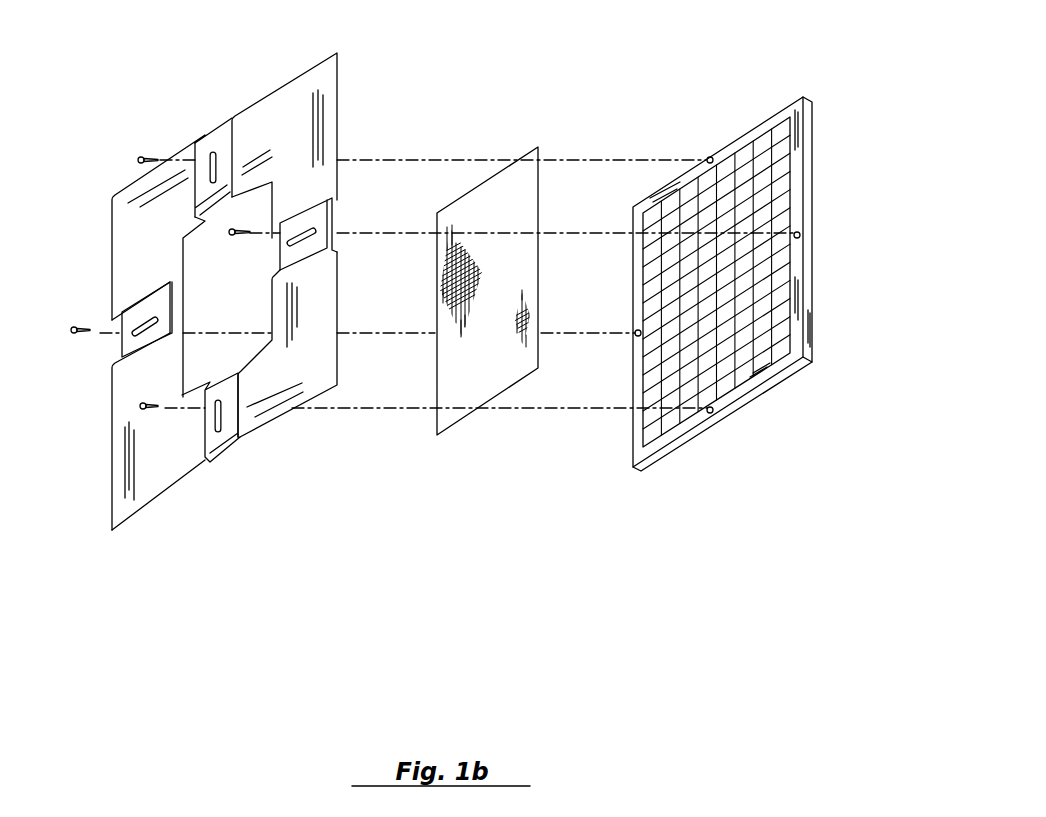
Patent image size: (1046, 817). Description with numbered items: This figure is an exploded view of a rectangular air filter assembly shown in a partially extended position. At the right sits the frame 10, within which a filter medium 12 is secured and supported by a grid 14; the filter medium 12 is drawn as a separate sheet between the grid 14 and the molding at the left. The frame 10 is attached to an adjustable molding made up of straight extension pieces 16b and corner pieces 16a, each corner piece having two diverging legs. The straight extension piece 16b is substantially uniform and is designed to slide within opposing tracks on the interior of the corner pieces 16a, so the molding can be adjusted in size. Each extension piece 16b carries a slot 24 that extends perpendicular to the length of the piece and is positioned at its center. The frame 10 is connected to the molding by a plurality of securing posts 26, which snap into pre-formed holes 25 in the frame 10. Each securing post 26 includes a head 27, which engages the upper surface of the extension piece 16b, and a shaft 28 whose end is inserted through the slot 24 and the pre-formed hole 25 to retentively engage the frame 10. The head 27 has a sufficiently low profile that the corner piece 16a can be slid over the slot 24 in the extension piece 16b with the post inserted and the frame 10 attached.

The frame 10 is at (658, 457).
The filter medium 12 is at (453, 417).
The grid 14 is at (778, 199).
The corner piece 16a is at (272, 412).
The straight extension piece 16b is at (218, 447).
The slot 24 is at (203, 197).
The pre-formed hole 25 is at (800, 236).
The securing post 26 is at (72, 343).
The head 27 is at (138, 157).
The shaft 28 is at (155, 157).